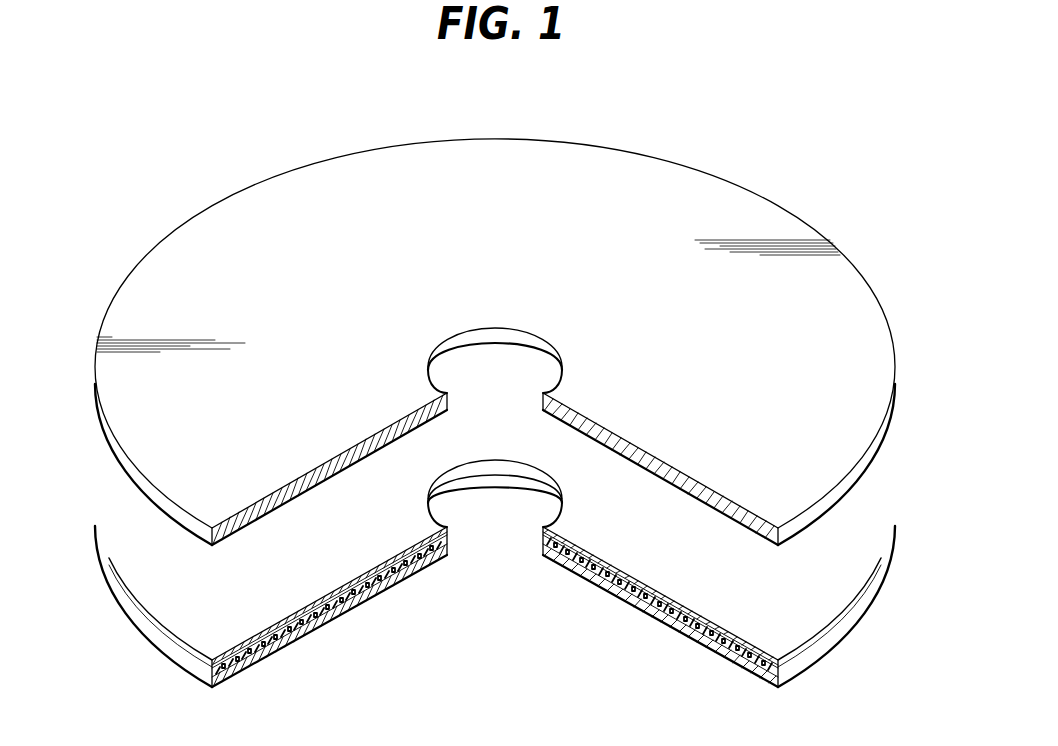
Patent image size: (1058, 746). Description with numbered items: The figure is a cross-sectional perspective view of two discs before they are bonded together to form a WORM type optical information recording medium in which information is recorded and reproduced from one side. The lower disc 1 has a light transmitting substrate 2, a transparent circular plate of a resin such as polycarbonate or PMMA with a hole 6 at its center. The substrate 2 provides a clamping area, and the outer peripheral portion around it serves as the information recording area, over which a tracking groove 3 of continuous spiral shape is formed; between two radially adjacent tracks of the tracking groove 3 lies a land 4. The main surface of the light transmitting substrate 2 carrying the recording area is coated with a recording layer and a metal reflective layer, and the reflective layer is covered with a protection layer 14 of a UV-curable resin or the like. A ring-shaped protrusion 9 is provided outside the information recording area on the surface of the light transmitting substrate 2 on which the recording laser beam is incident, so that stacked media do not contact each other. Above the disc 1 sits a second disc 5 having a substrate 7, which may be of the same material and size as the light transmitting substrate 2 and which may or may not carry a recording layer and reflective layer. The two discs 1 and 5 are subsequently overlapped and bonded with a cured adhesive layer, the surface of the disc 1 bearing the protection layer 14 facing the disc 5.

The disc 1 is at (161, 683).
The light transmitting substrate 2 is at (270, 650).
The tracking groove 3 is at (660, 617).
The land 4 is at (720, 650).
The disc 5 is at (841, 226).
The hole 6 is at (498, 375).
The substrate 7 is at (882, 318).
The protrusion 9 is at (570, 570).
The protection layer 14 is at (320, 593).